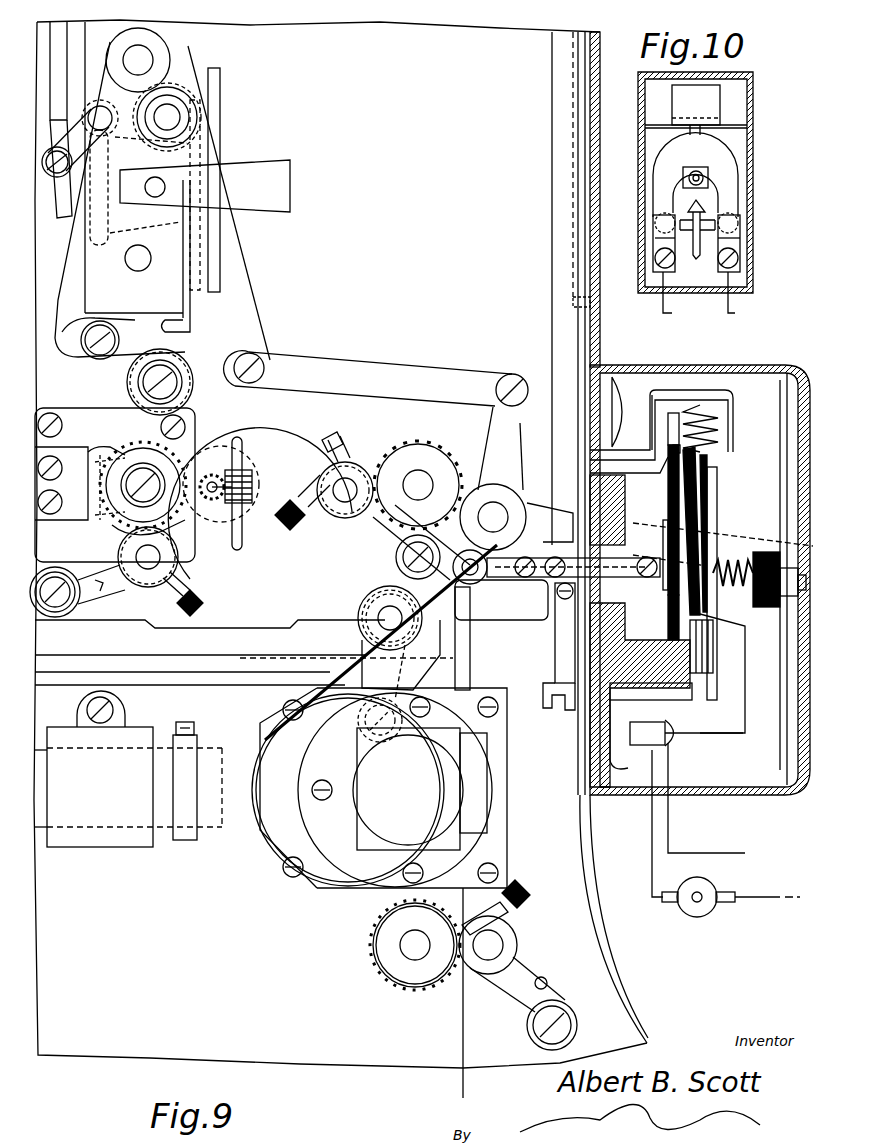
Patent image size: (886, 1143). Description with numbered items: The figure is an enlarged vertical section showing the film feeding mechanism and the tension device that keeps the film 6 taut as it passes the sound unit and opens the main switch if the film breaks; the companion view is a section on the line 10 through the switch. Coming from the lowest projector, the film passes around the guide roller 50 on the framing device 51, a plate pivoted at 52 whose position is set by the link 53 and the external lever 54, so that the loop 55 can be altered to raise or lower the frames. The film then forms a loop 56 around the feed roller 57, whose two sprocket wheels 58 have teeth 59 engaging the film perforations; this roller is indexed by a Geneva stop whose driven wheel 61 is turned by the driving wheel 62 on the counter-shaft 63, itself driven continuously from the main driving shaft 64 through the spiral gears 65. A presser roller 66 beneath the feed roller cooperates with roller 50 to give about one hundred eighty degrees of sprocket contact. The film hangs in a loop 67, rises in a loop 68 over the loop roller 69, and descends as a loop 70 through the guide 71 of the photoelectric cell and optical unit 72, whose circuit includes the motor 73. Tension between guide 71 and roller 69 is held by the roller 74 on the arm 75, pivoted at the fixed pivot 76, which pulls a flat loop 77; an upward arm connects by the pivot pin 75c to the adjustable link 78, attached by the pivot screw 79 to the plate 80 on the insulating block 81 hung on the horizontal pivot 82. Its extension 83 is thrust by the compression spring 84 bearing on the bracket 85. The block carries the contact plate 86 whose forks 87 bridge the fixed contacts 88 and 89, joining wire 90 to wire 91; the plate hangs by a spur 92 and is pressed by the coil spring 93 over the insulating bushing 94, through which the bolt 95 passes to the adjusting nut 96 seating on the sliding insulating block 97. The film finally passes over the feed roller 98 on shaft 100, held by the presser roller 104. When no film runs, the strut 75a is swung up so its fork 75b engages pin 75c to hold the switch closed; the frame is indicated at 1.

In FIG. 9, the frame side plate 1 is at (604, 891).
In FIG. 9, the film 6 is at (190, 326).
In FIG. 9, the section line 10— 10 is at (815, 347).
In FIG. 9, the guide roller 50 is at (128, 381).
In FIG. 9, the framing device 51 is at (247, 324).
In FIG. 9, the pivot 52 is at (152, 58).
In FIG. 9, the link 53 is at (388, 358).
In FIG. 9, the lever 54 is at (558, 530).
In FIG. 9, the loop 55 is at (192, 371).
In FIG. 9, the loop 56 is at (135, 445).
In FIG. 9, the feed roller 57 is at (193, 522).
In FIG. 9, the sprocket wheels 58 is at (175, 465).
In FIG. 9, the teeth 59 is at (120, 462).
In FIG. 9, the driven wheel 61 is at (96, 468).
In FIG. 9, the driving wheel 62 is at (217, 450).
In FIG. 9, the counter-shaft 63 is at (215, 492).
In FIG. 9, the main driving shaft 64 is at (243, 445).
In FIG. 9, the spiral gears 65 is at (254, 476).
In FIG. 9, the presser roller 66 is at (148, 578).
In FIG. 9, the loop 67 is at (273, 608).
In FIG. 9, the loop 68 is at (400, 442).
In FIG. 9, the loop roller 69 is at (436, 460).
In FIG. 9, the loop 70 is at (308, 694).
In FIG. 9, the guide 71 is at (265, 838).
In FIG. 9, the photoelectric cell and optical unit 72 is at (476, 789).
In FIG. 9, the motor 73 is at (700, 915).
In FIG. 9, the roller 74 is at (372, 598).
In FIG. 9, the arm 75 is at (444, 641).
In FIG. 9, the strut 75a is at (556, 652).
In FIG. 9, the fork 75b is at (547, 690).
In FIG. 9, the pivot pin 75c is at (486, 638).
In FIG. 9, the fixed pivot 76 is at (390, 735).
In FIG. 9, the flat loop 77 is at (475, 584).
In FIG. 9, the adjustable link 78 is at (539, 584).
In FIG. 9, the pivot screw 79 is at (647, 578).
In FIG. 9, the plate 80 is at (664, 542).
In FIG. 9, the insulating block 81 is at (668, 628).
In FIG. 9, the horizontal pivot 82 is at (672, 449).
In FIG. 9, the extension 83 is at (673, 412).
In FIG. 9, the compression spring 84 is at (700, 412).
In FIG. 9, the bracket 85 is at (728, 406).
In FIG. 10, the bracket 85 is at (720, 104).
In FIG. 9, the contact plate 86 is at (718, 490).
In FIG. 10, the contact plate 86 is at (727, 175).
In FIG. 9, the forks 87 is at (713, 650).
In FIG. 9, the fixed contact 88 is at (686, 700).
In FIG. 10, the fixed contact 88 is at (655, 252).
In FIG. 10, the fixed contact 89 is at (737, 246).
In FIG. 9, the wire 90 is at (722, 849).
In FIG. 10, the wire 90 is at (743, 297).
In FIG. 9, the wire 91 is at (653, 838).
In FIG. 10, the wire 91 is at (680, 300).
In FIG. 9, the spur 92 is at (703, 455).
In FIG. 9, the coil spring 93 is at (730, 565).
In FIG. 9, the insulating bushing 94 is at (766, 546).
In FIG. 9, the bolt 95 is at (790, 598).
In FIG. 9, the adjusting nut 96 is at (785, 602).
In FIG. 9, the insulating block 97 is at (746, 650).
In FIG. 9, the feed roller 98 is at (404, 978).
In FIG. 9, the shaft 100 is at (410, 945).
In FIG. 9, the presser roller 104 is at (518, 940).